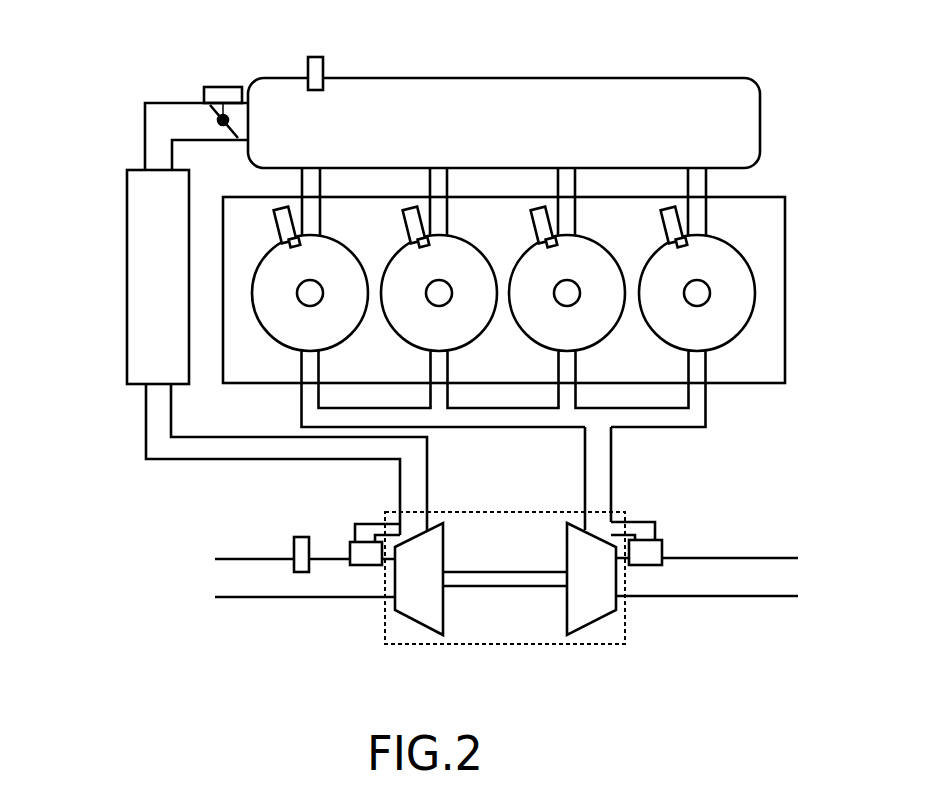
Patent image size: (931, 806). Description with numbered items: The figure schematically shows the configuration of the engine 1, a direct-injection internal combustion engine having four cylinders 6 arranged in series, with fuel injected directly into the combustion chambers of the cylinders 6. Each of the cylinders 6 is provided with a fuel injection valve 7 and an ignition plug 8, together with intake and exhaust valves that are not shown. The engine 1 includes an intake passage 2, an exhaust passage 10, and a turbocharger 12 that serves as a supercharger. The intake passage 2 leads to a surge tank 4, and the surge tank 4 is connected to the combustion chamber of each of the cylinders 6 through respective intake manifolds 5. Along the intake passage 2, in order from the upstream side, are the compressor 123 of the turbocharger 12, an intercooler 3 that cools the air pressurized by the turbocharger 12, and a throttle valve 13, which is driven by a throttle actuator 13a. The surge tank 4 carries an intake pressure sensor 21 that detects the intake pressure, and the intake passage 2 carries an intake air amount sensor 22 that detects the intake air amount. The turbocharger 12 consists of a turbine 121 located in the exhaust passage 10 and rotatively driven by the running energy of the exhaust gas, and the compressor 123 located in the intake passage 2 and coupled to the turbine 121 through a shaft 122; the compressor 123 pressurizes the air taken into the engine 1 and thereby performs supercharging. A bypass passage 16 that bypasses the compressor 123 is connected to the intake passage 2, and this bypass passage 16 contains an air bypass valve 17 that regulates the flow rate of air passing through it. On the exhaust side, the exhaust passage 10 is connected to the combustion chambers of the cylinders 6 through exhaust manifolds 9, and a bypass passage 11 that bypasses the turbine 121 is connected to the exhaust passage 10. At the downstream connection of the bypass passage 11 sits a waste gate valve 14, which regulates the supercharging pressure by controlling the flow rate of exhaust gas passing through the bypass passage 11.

The engine 1 is at (770, 78).
The intake passage 2 is at (208, 459).
The intercooler 3 is at (127, 262).
The surge tank 4 is at (453, 78).
The intake manifolds 5 is at (302, 183).
The cylinders 6 is at (327, 237).
The fuel injection valve 7 is at (276, 231).
The ignition plug 8 is at (308, 280).
The exhaust manifolds 9 is at (301, 403).
The exhaust passage 10 is at (611, 479).
The bypass passage 11 is at (655, 522).
The turbocharger 12 is at (385, 618).
The throttle valve 13 is at (216, 117).
The throttle actuator 13a is at (228, 87).
The waste gate valve 14 is at (662, 548).
The bypass passage 16 is at (363, 523).
The air bypass valve 17 is at (350, 552).
The intake pressure sensor 21 is at (308, 62).
The intake air amount sensor 22 is at (294, 547).
The turbine 121 is at (598, 622).
The shaft 122 is at (502, 572).
The compressor 123 is at (413, 623).